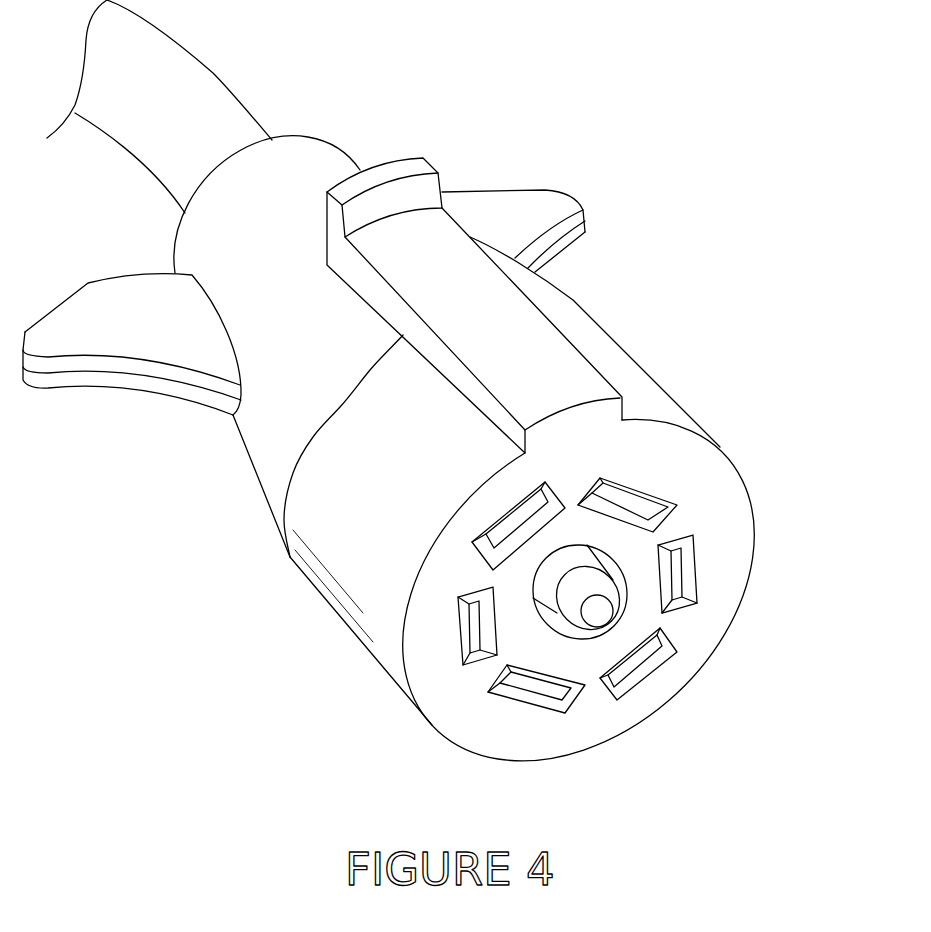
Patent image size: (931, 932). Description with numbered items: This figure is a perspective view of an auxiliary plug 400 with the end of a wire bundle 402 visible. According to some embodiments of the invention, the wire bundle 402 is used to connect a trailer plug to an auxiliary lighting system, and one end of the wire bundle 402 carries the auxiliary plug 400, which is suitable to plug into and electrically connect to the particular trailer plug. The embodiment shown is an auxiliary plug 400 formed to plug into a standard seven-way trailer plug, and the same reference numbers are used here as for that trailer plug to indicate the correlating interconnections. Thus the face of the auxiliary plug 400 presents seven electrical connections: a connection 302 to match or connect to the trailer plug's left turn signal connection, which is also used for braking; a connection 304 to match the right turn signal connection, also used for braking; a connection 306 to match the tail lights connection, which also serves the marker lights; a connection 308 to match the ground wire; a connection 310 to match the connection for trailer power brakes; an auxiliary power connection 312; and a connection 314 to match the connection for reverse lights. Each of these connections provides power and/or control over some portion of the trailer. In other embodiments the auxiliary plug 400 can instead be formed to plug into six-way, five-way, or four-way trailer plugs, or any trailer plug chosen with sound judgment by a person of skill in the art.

The auxiliary plug 400 is at (367, 498).
The wire bundle 402 is at (195, 97).
The left turn signal connection 302 is at (697, 557).
The right turn signal connection 304 is at (462, 652).
The tail lights connection 306 is at (643, 503).
The ground wire connection 308 is at (630, 693).
The trailer power brakes connection 310 is at (517, 700).
The auxiliary power connection 312 is at (487, 535).
The reverse lights connection 314 is at (603, 587).